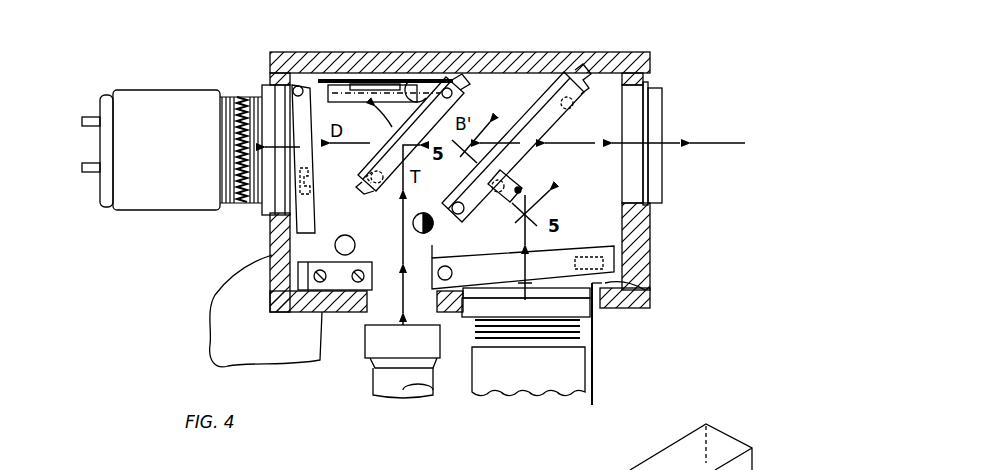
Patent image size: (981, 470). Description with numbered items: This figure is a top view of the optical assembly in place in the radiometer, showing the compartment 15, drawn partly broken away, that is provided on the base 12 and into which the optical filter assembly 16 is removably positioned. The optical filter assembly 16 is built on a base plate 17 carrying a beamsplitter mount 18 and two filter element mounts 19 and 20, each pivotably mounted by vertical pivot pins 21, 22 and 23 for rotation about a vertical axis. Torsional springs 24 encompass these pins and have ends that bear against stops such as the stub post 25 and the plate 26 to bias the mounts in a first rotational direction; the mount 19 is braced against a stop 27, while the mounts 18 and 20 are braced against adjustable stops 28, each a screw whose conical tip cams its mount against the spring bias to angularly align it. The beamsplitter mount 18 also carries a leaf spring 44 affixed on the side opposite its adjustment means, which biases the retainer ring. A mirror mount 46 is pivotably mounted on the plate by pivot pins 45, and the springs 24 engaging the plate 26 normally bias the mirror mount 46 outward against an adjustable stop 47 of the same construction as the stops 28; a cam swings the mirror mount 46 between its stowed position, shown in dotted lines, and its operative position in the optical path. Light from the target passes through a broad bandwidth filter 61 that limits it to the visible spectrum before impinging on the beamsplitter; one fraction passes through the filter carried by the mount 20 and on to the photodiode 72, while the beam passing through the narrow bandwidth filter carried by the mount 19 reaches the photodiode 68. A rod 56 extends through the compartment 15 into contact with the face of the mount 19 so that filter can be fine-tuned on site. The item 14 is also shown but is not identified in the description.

The base 12 is at (260, 349).
The sample cuvette 14 is at (368, 346).
The compartment 15 is at (512, 55).
The optical filter assembly 16 is at (668, 184).
The base plate 17 is at (605, 174).
The beamsplitter mount 18 is at (574, 78).
The filter element mount 19 is at (565, 257).
The filter element mount 20 is at (308, 218).
The vertical pivot pin 21 is at (490, 215).
The vertical pivot pin 22 is at (438, 274).
The vertical pivot pin 23 is at (273, 60).
The torsional spring 24 is at (333, 78).
The stub post 25 is at (402, 232).
The plate 26 is at (428, 75).
The stop 27 is at (646, 288).
The adjustable stop 28 is at (572, 104).
The leaf spring 44 is at (466, 185).
The pivot pin 45 is at (452, 95).
The mirror mount 46 is at (403, 82).
The adjustable stop 47 is at (376, 190).
The rod 56 is at (594, 326).
The broad bandwidth filter 61 is at (663, 111).
The photodiode 68 is at (594, 357).
The photodiode 72 is at (157, 110).